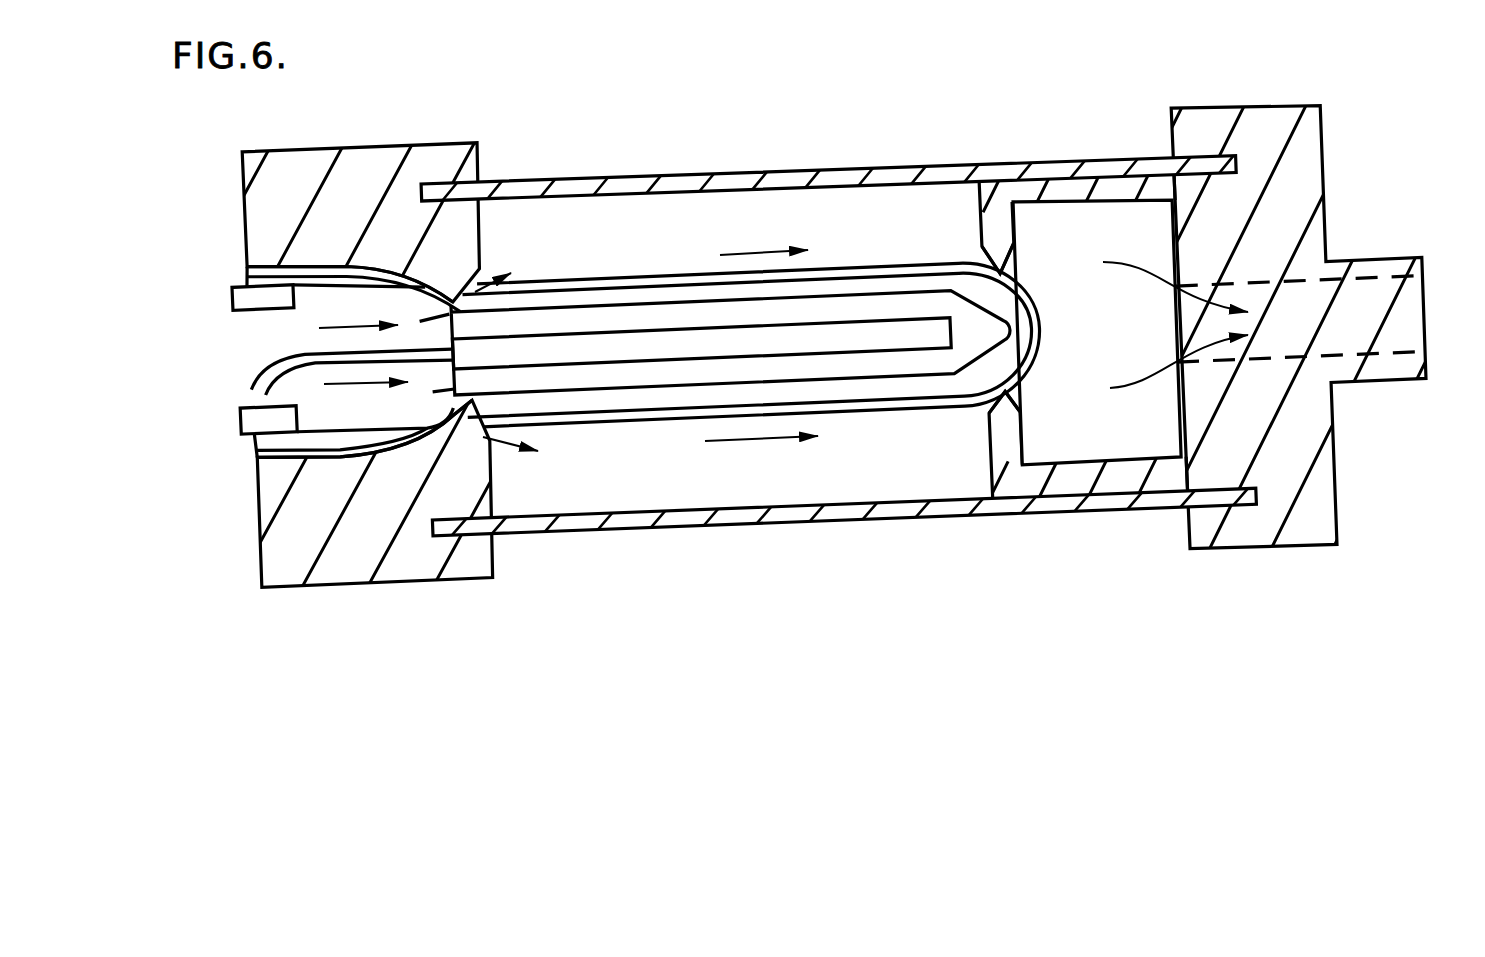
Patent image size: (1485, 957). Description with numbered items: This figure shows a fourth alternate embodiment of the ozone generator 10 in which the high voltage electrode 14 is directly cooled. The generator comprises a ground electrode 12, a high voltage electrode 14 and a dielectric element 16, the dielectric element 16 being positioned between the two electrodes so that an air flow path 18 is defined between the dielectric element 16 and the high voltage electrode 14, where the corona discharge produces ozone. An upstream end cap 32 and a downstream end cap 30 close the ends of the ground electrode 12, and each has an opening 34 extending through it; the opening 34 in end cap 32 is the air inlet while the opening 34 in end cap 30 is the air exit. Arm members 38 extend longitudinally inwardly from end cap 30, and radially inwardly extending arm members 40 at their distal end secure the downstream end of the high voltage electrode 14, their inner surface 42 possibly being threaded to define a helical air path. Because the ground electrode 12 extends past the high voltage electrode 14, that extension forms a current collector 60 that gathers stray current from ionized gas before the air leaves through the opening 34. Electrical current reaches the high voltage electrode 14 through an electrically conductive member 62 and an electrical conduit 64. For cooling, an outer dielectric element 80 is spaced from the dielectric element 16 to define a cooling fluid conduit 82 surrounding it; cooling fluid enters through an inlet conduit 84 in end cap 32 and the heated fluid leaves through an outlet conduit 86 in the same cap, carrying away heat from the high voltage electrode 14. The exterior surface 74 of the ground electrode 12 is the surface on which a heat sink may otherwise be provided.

The ozone generator 10 is at (737, 124).
The ground electrode 12 is at (655, 540).
The high voltage electrode 14 is at (920, 322).
The dielectric element 16 is at (580, 320).
The air flow path 18 is at (744, 441).
The end cap 30 is at (1273, 152).
The end cap 32 is at (399, 590).
The opening 34 is at (1373, 296).
The arm members 38 is at (1100, 474).
The radially inwardly extending arm members 40 is at (996, 432).
The inner surface 42 is at (1013, 263).
The current collector 60 is at (1070, 163).
The electrically conductive member 62 is at (242, 305).
The electrical conduit 64 is at (291, 362).
The exterior surface 74 is at (903, 162).
The outer dielectric element 80 is at (654, 277).
The cooling fluid conduit 82 is at (880, 290).
The inlet conduit 84 is at (280, 267).
The outlet conduit 86 is at (337, 447).